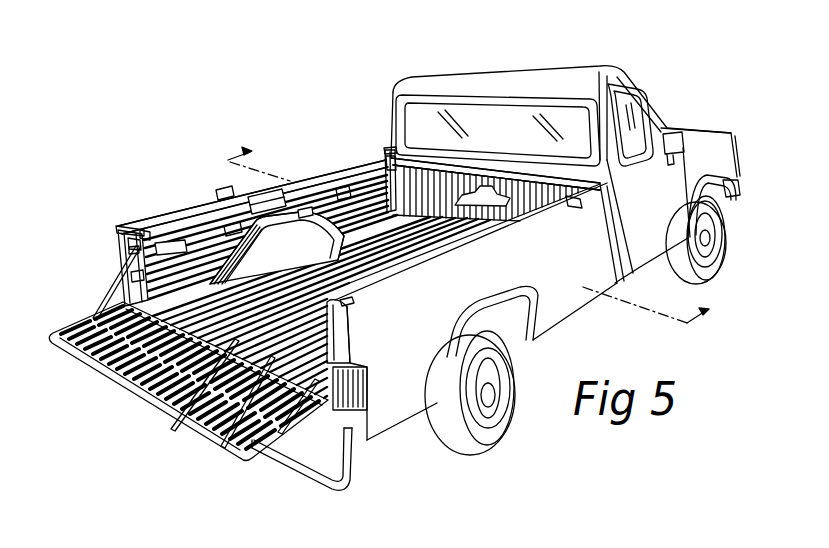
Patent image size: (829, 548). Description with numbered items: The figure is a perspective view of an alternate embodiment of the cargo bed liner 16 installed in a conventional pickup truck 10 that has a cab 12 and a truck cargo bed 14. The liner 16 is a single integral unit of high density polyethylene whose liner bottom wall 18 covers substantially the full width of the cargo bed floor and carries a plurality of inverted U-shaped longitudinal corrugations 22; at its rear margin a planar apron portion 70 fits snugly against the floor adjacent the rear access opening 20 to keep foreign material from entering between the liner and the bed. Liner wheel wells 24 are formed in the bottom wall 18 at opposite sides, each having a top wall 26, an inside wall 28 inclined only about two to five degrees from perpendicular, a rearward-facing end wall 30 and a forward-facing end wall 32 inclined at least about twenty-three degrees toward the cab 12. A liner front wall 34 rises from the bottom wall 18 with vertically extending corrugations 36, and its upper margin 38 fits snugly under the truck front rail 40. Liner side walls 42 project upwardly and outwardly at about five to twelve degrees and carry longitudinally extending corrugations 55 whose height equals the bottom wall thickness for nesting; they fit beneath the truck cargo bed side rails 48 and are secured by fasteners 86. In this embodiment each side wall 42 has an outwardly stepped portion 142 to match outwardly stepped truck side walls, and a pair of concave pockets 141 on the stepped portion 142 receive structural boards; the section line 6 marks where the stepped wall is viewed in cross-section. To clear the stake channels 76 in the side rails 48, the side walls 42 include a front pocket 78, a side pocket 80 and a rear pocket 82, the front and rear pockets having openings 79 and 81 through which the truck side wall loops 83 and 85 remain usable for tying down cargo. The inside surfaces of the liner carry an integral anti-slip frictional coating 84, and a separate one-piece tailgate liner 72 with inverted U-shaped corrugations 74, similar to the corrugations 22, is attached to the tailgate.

The pickup truck 10 is at (572, 60).
The cab 12 is at (612, 73).
The truck cargo bed 14 is at (566, 316).
The truck cargo bed liner 16 is at (135, 262).
The liner bottom wall 18 is at (83, 322).
The rear access opening 20 is at (332, 410).
The longitudinal corrugations 22 is at (228, 338).
The liner wheel wells 24 is at (228, 228).
The top wall 26 is at (231, 229).
The inside wall 28 is at (304, 208).
The end wall 30 is at (205, 238).
The end wall 32 is at (277, 248).
The liner front wall 34 is at (446, 172).
The vertically extending corrugations 36 is at (505, 184).
The upper margin 38 is at (392, 168).
The truck front rail 40 is at (514, 170).
The liner side walls 42 is at (165, 245).
The truck cargo bed side rail 48 is at (140, 236).
The longitudinally extending corrugations 55 is at (336, 182).
The planar apron portion 70 is at (327, 422).
The tailgate liner 72 is at (88, 356).
The corrugations 74 is at (158, 387).
The stake channels 76 is at (350, 301).
The front pocket 78 is at (388, 157).
The opening 79 is at (391, 190).
The side pocket 80 is at (222, 189).
The opening 81 is at (131, 250).
The rear pocket 82 is at (138, 277).
The truck side wall loop 83 is at (452, 214).
The anti-slip frictional coating 84 is at (236, 345).
The truck side wall loop 85 is at (137, 240).
The fasteners 86 is at (265, 352).
The concave pockets 141 is at (142, 235).
The outwardly stepped portion 142 is at (94, 275).
The section line 6- 6 is at (477, 228).